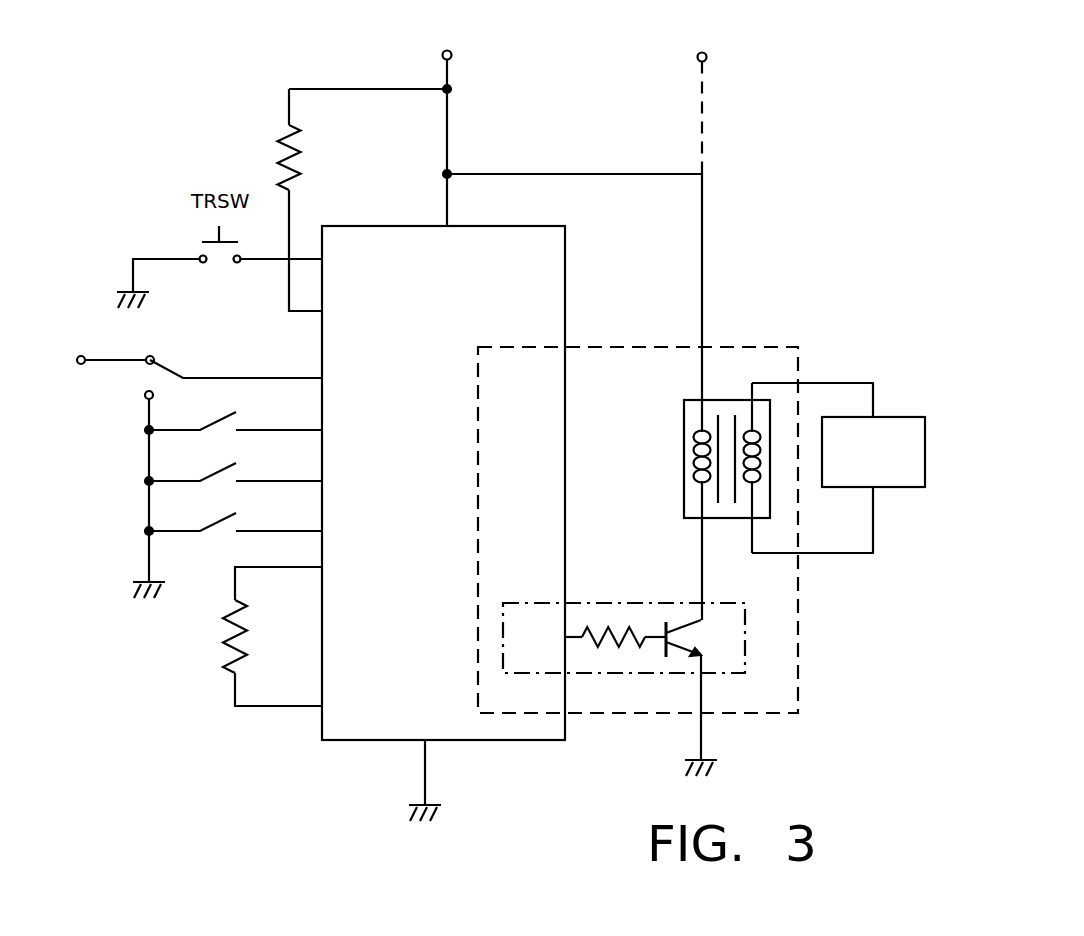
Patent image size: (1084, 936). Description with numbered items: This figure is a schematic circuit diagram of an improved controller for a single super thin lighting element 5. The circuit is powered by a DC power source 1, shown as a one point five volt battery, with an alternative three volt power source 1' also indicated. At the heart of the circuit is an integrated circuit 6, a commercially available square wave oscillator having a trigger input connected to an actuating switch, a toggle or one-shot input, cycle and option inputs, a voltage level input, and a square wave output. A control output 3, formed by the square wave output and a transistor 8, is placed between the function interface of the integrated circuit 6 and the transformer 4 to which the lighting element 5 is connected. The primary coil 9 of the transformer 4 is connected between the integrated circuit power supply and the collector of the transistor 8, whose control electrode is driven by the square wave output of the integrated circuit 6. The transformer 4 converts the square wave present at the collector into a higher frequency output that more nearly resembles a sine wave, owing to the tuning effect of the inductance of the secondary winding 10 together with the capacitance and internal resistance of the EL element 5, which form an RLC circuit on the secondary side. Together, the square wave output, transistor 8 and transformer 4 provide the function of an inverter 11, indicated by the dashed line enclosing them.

The DC power source 1 is at (268, 223).
The 3V power source 1' is at (731, 41).
The control output 3 is at (728, 663).
The transformer 4 is at (738, 421).
The lighting element 5 is at (900, 428).
The integrated circuit 6 is at (452, 675).
The transistor 8 is at (660, 645).
The primary coil 9 is at (690, 447).
The secondary coil 10 is at (762, 437).
The inverter 11 is at (782, 618).